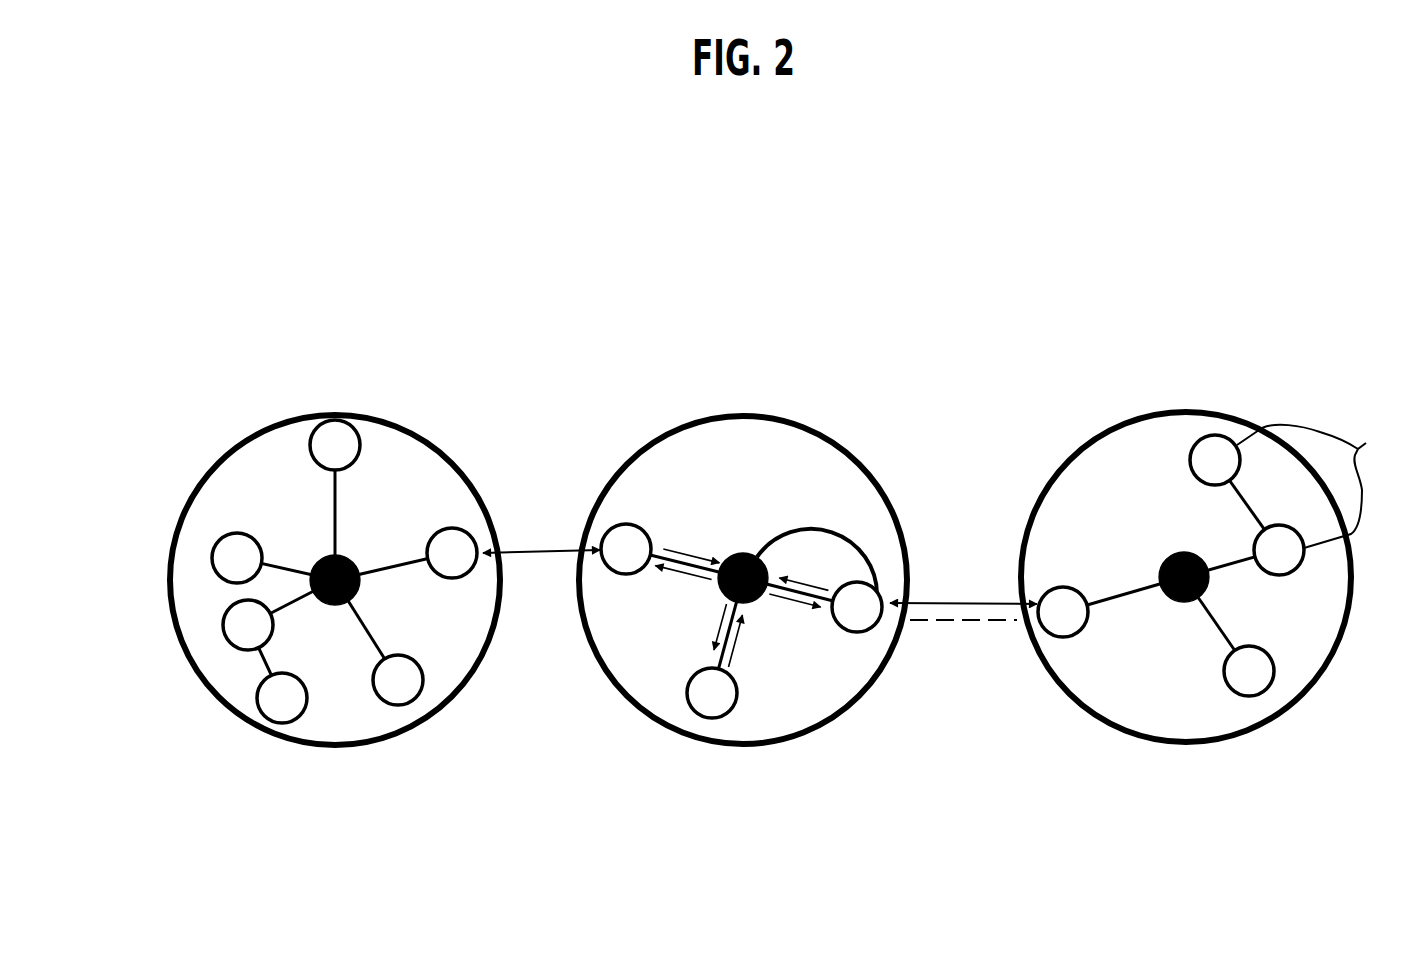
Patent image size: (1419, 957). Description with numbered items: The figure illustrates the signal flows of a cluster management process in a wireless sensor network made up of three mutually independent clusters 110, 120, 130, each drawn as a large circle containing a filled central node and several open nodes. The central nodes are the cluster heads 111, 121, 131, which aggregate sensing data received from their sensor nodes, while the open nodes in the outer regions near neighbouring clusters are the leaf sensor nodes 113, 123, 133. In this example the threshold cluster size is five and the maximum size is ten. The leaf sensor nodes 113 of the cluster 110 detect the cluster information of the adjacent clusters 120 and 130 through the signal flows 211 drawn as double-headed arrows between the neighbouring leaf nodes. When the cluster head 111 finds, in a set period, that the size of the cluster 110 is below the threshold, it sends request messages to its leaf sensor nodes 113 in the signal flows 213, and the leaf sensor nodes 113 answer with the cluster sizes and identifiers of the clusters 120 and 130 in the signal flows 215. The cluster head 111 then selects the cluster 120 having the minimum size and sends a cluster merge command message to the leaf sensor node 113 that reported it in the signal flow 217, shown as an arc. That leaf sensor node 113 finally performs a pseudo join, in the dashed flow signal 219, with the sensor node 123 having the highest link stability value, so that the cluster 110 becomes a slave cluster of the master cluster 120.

The cluster 110 is at (743, 742).
The cluster head 111 is at (736, 553).
The leaf sensor nodes 113 is at (613, 572).
The cluster 120 is at (1185, 743).
The cluster head 121 is at (1168, 597).
The leaf sensor nodes 123 is at (1025, 437).
The cluster 130 is at (337, 745).
The cluster head 131 is at (350, 557).
The leaf sensor nodes 133 is at (219, 540).
The signal flows 211 is at (760, 559).
The signal flows 213 is at (737, 608).
The signal flows 215 is at (750, 593).
The signal flow 217 is at (817, 547).
The flow signal 219 is at (967, 620).